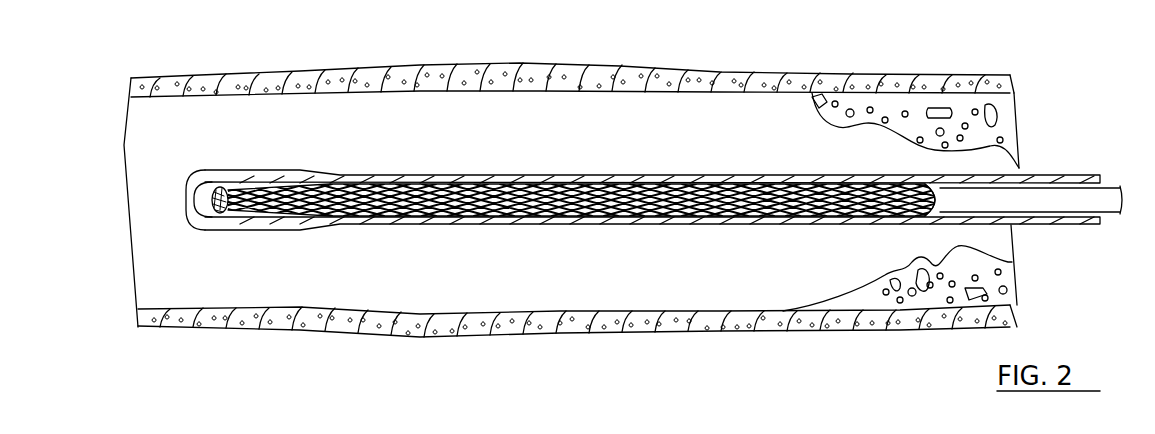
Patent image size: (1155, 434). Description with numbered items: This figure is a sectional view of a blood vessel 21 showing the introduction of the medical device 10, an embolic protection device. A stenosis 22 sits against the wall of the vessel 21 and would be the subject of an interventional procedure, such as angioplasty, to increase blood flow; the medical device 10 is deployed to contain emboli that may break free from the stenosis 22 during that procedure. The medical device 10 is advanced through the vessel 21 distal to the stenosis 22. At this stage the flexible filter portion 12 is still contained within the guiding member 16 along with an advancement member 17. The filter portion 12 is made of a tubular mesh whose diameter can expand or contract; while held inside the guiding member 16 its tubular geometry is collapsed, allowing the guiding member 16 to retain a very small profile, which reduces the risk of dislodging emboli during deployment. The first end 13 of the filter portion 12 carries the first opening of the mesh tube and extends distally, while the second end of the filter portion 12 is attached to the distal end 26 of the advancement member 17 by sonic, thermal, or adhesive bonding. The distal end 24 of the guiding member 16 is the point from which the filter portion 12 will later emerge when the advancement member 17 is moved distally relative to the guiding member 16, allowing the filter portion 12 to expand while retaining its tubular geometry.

The medical device 10 is at (658, 150).
The filter portion 12 is at (512, 195).
The first end 13 is at (208, 194).
The guiding member 16 is at (739, 176).
The advancement member 17 is at (1013, 198).
The vessel 21 is at (535, 77).
The stenosis 22 is at (906, 294).
The distal end of the guiding member 24 is at (187, 207).
The distal end of the advancement member 26 is at (943, 183).